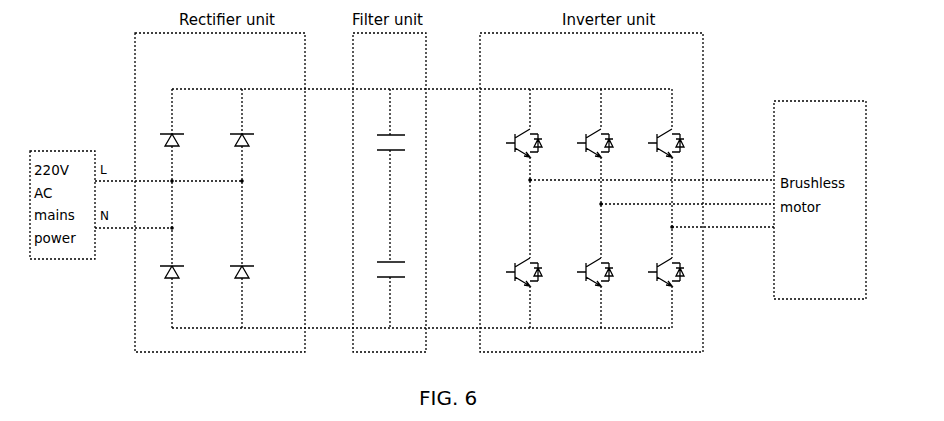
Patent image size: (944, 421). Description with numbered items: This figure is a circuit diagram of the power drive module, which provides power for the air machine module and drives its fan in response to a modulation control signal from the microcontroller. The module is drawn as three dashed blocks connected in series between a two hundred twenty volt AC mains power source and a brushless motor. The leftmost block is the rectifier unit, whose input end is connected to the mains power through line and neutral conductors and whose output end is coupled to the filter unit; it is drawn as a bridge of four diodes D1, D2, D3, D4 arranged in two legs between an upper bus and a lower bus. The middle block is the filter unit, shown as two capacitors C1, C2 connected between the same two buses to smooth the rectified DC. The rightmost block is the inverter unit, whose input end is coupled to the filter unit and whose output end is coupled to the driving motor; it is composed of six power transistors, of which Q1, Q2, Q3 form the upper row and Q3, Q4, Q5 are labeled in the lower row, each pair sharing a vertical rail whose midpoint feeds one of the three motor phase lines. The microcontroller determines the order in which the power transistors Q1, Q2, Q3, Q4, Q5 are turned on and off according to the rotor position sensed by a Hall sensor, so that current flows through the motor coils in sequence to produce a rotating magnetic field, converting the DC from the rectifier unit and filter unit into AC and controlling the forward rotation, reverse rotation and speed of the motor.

The rectifier diode D1 is at (182, 139).
The rectifier diode D2 is at (252, 139).
The rectifier diode D3 is at (182, 271).
The rectifier diode D4 is at (252, 271).
The filter capacitor C1 is at (395, 151).
The filter capacitor C2 is at (395, 279).
The power transistor Q1 is at (533, 137).
The power transistor Q2 is at (604, 137).
The power transistor Q3 is at (672, 137).
The power transistor Q4 is at (604, 266).
The power transistor Q5 is at (672, 266).